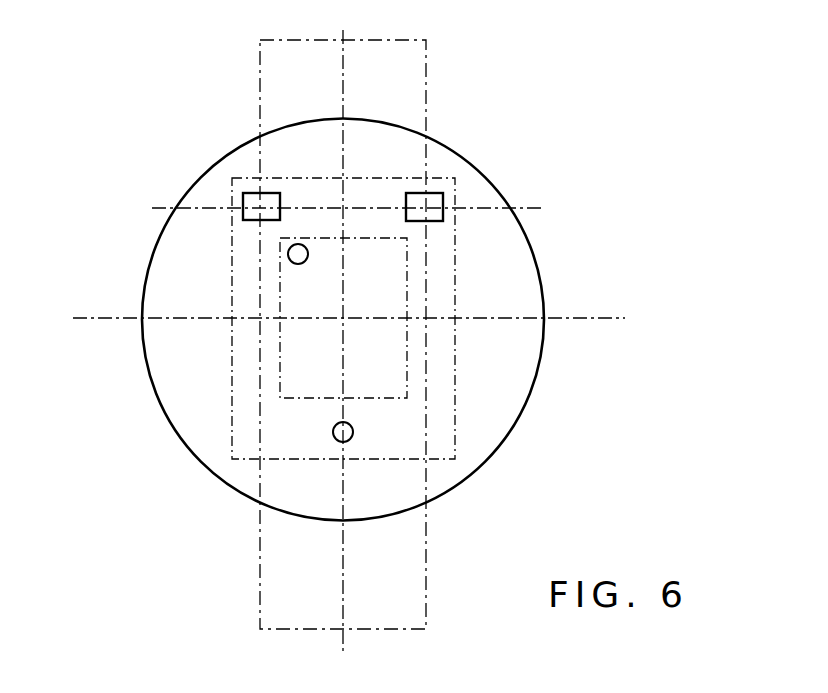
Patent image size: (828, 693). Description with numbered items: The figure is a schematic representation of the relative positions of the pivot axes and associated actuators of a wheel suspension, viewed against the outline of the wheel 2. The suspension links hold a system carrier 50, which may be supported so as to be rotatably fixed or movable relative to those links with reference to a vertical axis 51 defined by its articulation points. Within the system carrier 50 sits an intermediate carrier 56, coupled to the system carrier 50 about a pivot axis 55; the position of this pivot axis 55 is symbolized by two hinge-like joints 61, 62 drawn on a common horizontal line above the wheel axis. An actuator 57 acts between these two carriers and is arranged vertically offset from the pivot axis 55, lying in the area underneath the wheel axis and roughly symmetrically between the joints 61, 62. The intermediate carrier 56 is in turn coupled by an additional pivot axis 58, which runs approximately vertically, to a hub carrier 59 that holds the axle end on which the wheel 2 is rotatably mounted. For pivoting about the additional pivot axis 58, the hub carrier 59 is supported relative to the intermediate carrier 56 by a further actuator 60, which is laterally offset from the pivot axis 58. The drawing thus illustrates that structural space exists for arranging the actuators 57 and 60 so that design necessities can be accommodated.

The wheel 2 is at (543, 345).
The system carrier 50 is at (415, 123).
The vertical axis 51 is at (340, 290).
The pivot axis 55 is at (533, 208).
The intermediate carrier 56 is at (443, 350).
The actuator 57 is at (330, 433).
The additional pivot axis 58 is at (343, 93).
The hub carrier 59 is at (295, 360).
The actuator 60 is at (288, 254).
The hinge-like joint 61 is at (253, 192).
The hinge-like joint 62 is at (430, 222).